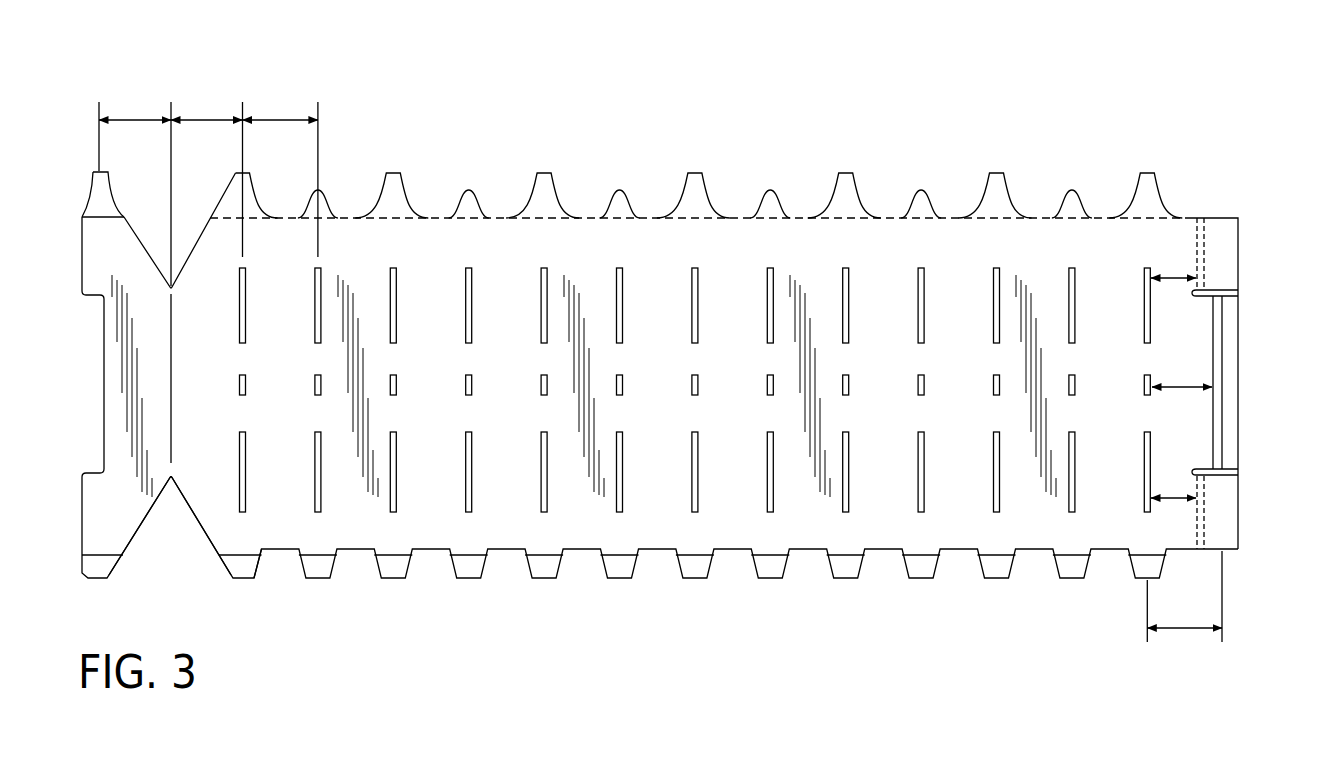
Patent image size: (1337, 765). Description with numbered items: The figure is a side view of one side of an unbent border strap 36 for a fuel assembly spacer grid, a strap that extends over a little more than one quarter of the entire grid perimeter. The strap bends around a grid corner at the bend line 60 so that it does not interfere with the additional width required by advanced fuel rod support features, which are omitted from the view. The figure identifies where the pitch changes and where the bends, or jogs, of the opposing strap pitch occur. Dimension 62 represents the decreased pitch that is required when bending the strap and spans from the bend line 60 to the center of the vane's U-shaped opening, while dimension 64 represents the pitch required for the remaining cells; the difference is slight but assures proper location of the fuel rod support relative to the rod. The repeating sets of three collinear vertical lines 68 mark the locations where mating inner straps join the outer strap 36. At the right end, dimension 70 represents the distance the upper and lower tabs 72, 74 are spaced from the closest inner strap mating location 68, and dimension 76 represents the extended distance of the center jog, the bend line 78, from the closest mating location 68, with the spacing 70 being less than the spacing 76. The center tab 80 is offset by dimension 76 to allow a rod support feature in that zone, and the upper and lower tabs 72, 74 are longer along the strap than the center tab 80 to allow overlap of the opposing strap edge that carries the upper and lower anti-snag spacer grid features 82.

The border strap 36 is at (719, 163).
The bend line 60 is at (171, 481).
The dimension 62 is at (205, 119).
The dimension 64 is at (277, 120).
The collinear vertical lines 68 is at (403, 302).
The dimension 70 is at (1174, 277).
The upper tab 72 is at (1222, 218).
The lower tab 74 is at (1225, 520).
The dimension 76 is at (1180, 385).
The bend line 78 is at (1217, 420).
The center tab 80 is at (1230, 322).
The anti-snag spacer grid features 82 is at (1139, 172).